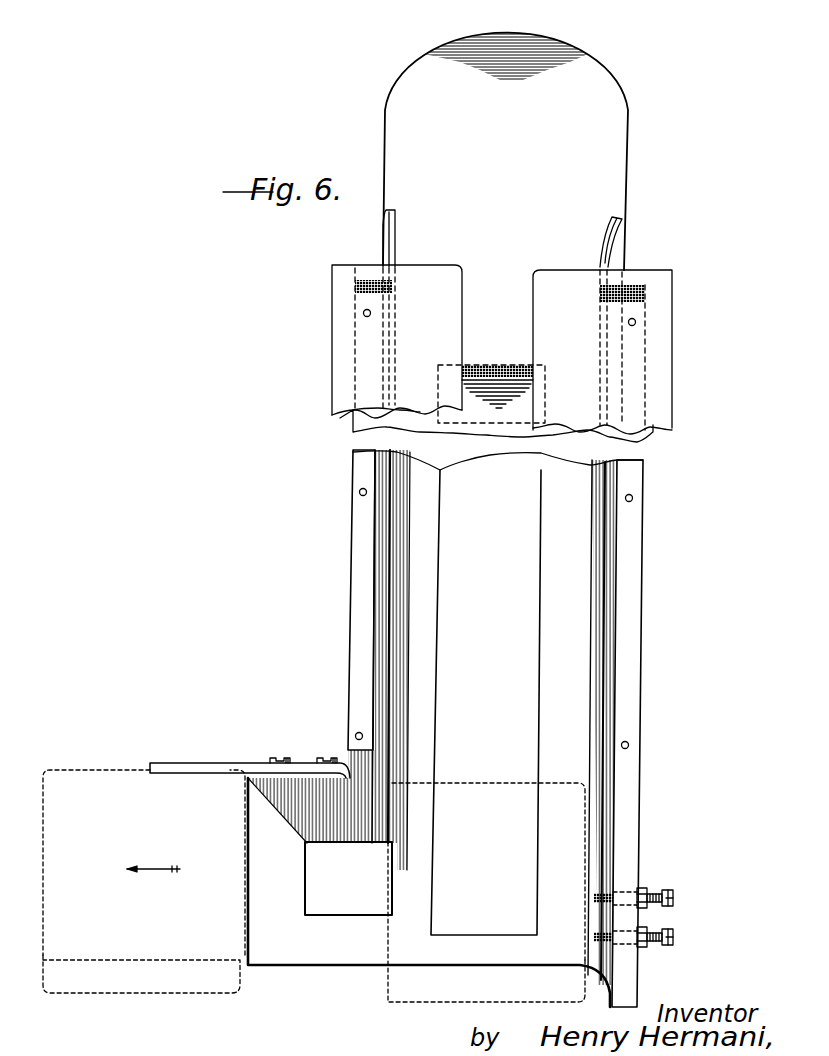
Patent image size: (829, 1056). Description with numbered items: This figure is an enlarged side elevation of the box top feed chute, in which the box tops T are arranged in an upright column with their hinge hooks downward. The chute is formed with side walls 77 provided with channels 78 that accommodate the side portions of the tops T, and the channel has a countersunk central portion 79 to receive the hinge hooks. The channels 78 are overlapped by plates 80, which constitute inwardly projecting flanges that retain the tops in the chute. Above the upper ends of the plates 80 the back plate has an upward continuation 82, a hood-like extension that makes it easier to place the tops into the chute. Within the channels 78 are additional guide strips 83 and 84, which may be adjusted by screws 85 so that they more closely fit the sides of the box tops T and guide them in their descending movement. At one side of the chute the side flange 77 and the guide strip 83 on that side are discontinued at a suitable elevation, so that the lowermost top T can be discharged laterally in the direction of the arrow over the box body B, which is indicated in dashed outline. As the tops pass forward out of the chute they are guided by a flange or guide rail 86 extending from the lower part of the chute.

The side walls 77 is at (358, 630).
The channels 78 is at (405, 573).
The countersunk central portion 79 is at (493, 397).
The plates 80 is at (542, 310).
The upward continuation 82 is at (608, 116).
The guide strip 83 is at (387, 530).
The guide strip 84 is at (597, 543).
The screws 85 is at (673, 932).
The guide rail 86 is at (214, 763).
The box top T is at (108, 770).
The box body B is at (153, 995).